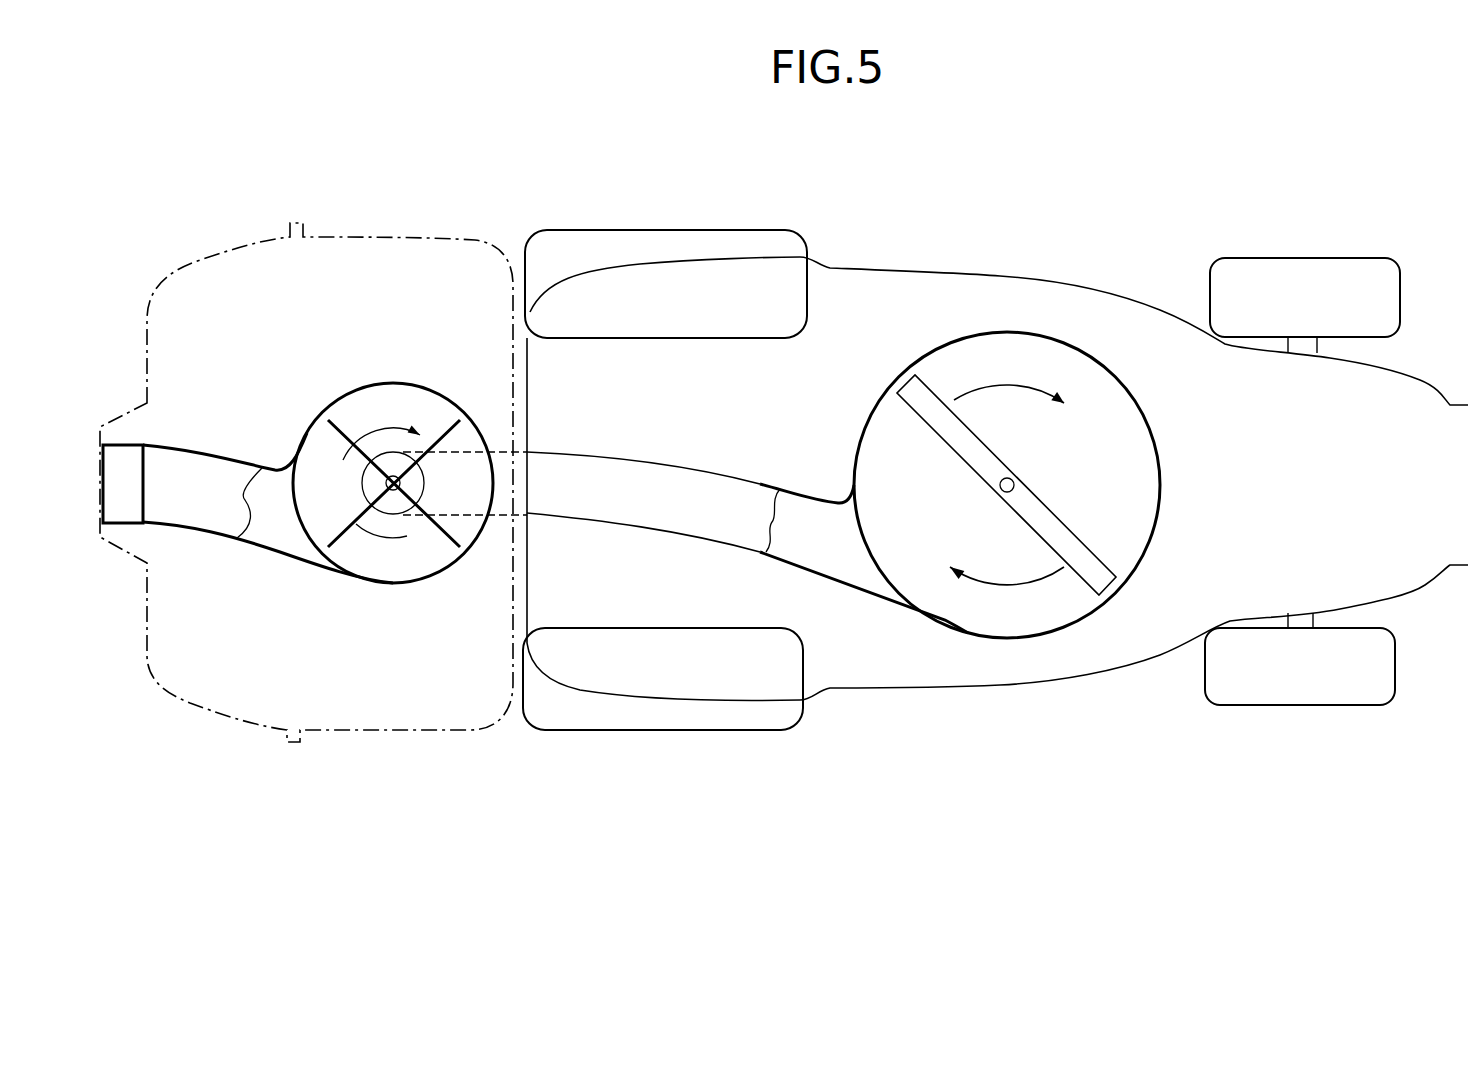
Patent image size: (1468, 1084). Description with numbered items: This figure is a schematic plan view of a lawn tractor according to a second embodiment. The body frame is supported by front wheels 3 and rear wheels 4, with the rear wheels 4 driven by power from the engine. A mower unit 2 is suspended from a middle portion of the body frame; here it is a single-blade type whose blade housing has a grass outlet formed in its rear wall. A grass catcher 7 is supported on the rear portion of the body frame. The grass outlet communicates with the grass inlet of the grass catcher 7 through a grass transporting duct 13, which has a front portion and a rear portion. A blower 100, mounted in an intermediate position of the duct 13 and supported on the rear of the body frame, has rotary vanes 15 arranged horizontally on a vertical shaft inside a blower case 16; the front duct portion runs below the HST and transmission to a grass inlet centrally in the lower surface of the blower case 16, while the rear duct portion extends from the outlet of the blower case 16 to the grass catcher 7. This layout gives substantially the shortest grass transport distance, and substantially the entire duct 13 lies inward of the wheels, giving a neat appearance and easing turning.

The mower unit 2 is at (983, 330).
The front wheels 3 is at (1315, 267).
The rear wheels 4 is at (618, 237).
The grass catcher 7 is at (253, 243).
The grass transporting duct 13 is at (197, 527).
The rotary vanes 15 is at (443, 540).
The blower case 16 is at (447, 398).
The blower 100 is at (393, 464).